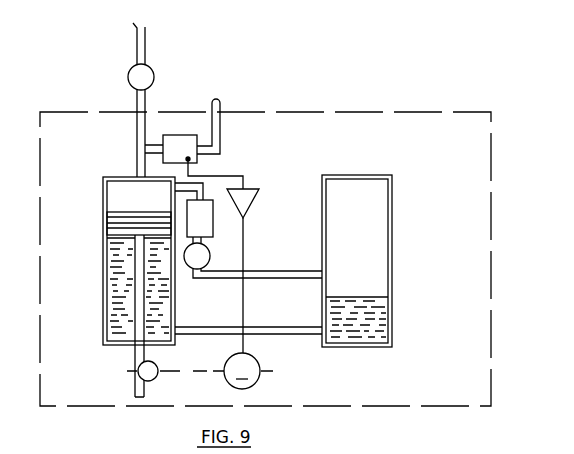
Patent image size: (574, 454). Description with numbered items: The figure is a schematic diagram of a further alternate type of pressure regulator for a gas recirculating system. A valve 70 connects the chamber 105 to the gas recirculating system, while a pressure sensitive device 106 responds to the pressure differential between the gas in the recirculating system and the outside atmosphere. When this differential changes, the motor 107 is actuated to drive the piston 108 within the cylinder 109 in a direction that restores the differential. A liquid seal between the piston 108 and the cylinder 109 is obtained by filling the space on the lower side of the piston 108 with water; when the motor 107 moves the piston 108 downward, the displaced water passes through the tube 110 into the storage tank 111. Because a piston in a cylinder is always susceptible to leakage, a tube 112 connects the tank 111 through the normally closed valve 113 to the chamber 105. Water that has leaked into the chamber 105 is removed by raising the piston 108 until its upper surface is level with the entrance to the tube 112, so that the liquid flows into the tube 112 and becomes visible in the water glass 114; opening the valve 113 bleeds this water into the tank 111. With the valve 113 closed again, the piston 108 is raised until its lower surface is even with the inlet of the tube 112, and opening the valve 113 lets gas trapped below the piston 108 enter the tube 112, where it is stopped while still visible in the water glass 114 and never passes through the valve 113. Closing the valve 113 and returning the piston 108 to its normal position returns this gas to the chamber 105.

The valve 70 is at (128, 70).
The chamber 105 is at (122, 192).
The pressure sensitive device 106 is at (176, 136).
The motor 107 is at (254, 377).
The piston 108 is at (115, 221).
The cylinder 109 is at (103, 263).
The tube 110 is at (289, 329).
The storage tank 111 is at (392, 260).
The tube 112 is at (268, 275).
The normally closed valve 113 is at (193, 279).
The water glass 114 is at (213, 221).